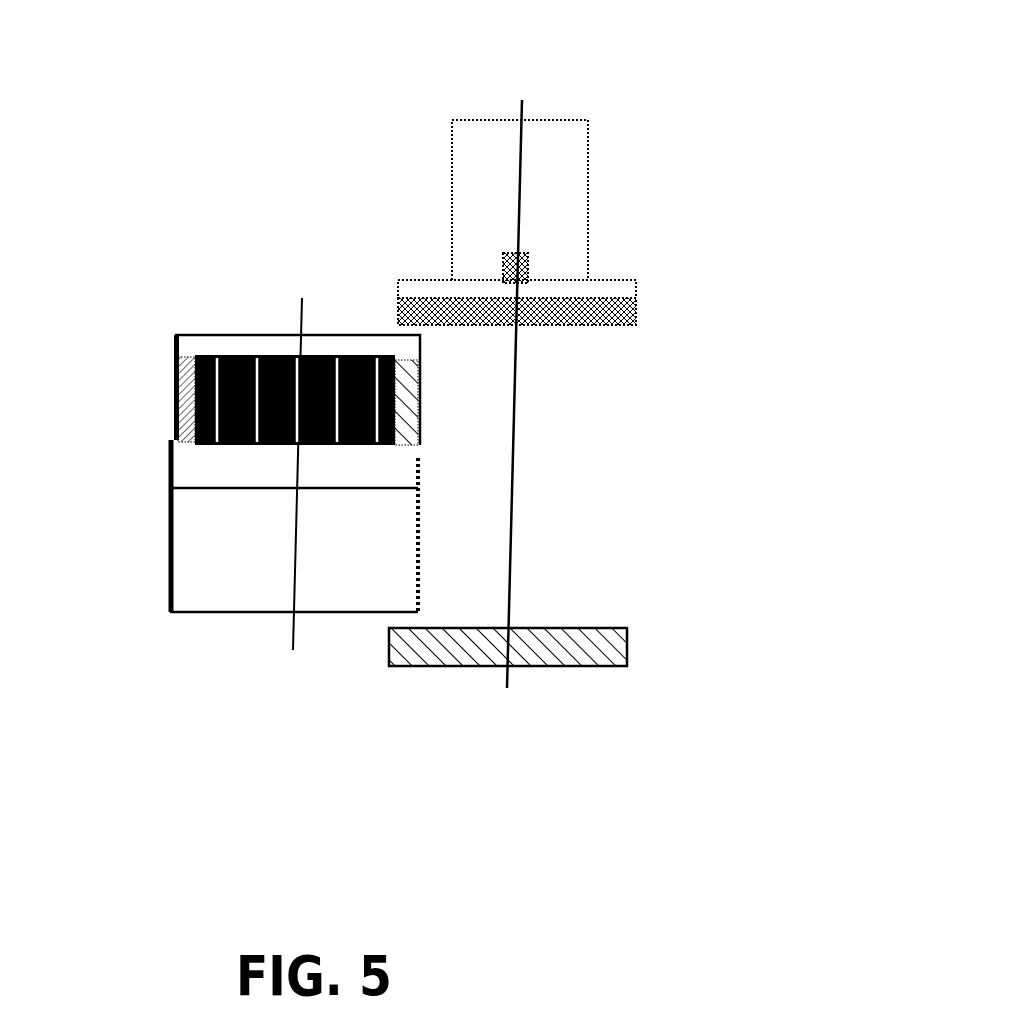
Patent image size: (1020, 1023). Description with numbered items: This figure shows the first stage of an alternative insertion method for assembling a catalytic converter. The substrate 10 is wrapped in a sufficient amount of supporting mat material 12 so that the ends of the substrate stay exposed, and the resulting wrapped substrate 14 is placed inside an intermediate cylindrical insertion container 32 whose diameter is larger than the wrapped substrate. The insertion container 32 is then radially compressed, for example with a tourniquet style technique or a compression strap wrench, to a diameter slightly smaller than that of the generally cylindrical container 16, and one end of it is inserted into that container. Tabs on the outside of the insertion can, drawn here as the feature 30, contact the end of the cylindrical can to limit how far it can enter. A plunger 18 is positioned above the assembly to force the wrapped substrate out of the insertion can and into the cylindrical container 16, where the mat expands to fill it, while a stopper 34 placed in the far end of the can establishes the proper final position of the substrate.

The substrate 10 is at (238, 352).
The supporting mat material 12 is at (172, 418).
The wrapped substrate 14 is at (327, 280).
The generally cylindrical container 16 is at (168, 548).
The plunger 18 is at (550, 190).
The spacer 30 is at (177, 346).
The insertion container 32 is at (420, 452).
The stopper 34 is at (627, 655).